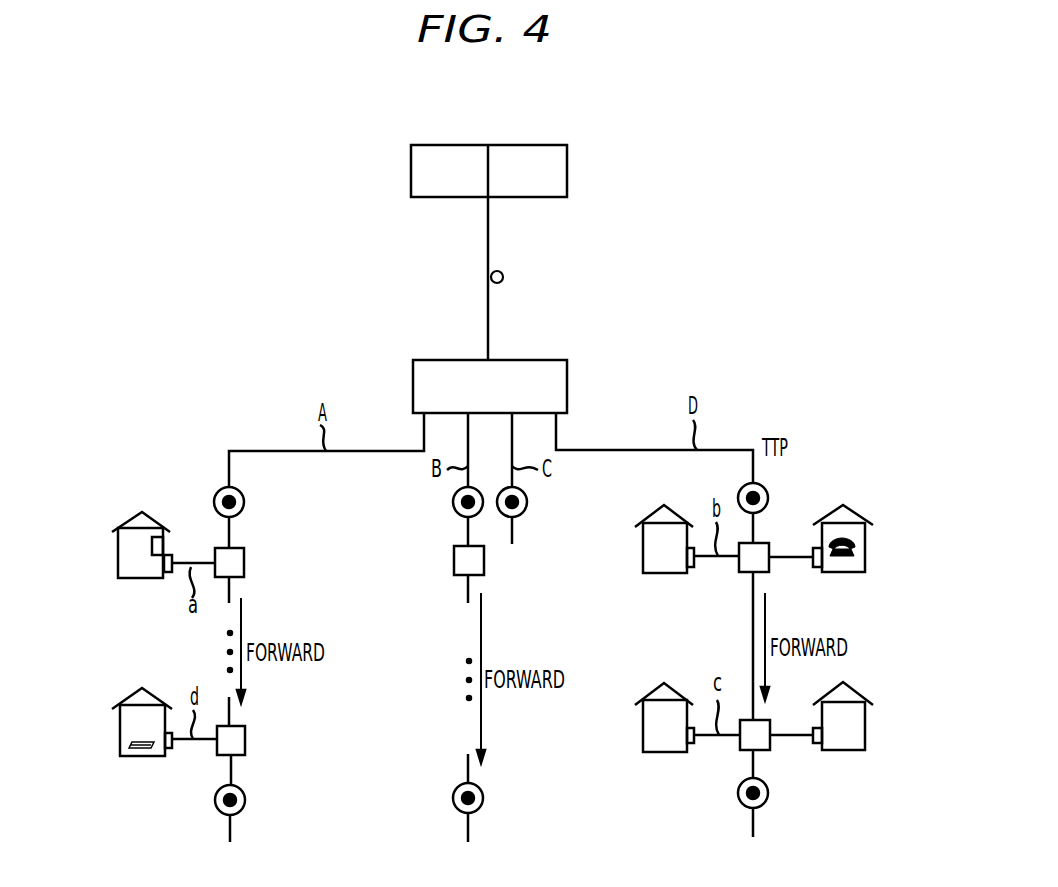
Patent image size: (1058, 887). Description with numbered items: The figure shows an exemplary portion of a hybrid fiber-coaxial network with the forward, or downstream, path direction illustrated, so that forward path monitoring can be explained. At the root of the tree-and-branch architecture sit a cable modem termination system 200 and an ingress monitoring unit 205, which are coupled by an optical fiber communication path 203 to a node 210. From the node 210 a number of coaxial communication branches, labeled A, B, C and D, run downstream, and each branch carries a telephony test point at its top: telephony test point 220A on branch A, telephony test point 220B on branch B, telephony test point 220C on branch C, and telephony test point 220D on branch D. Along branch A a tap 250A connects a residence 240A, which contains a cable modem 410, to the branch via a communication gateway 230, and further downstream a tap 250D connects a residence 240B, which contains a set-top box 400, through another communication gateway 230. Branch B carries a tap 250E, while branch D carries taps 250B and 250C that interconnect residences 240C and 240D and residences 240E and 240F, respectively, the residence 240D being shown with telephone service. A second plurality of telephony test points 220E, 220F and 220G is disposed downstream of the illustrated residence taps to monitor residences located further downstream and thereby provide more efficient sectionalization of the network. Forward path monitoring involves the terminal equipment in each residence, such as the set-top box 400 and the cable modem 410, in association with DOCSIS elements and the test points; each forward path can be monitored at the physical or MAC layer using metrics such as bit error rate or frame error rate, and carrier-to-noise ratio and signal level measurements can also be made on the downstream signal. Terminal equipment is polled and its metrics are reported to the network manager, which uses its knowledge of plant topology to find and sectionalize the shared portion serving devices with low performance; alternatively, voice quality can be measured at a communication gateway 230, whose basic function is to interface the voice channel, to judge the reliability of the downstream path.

The cable modem termination system (CMTS) 200 is at (567, 174).
The ingress monitoring unit (IMU) 205 is at (411, 170).
The optical fiber communication path 203 is at (488, 320).
The node 210 is at (567, 390).
The telephony test point (TTP) 220A is at (244, 505).
The telephony test point (TTP) 220B is at (454, 503).
The telephony test point (TTP) 220C is at (527, 503).
The telephony test point (TTP) 220D is at (768, 497).
The telephony test point (TTP) 220E is at (245, 803).
The telephony test point (TTP) 220F is at (454, 799).
The telephony test point (TTP) 220G is at (768, 796).
The tap 250A is at (244, 565).
The tap 250B is at (738, 570).
The tap 250C is at (738, 750).
The tap 250D is at (245, 743).
The tap 250E is at (454, 561).
The residence 240A is at (118, 555).
The residence 240B is at (120, 735).
The residence 240C is at (643, 553).
The residence 240D is at (865, 552).
The residence 240E is at (643, 731).
The residence 240F is at (865, 730).
The cable modem 410 is at (164, 546).
The set-top box 400 is at (130, 756).
The communication gateway 230 is at (175, 750).